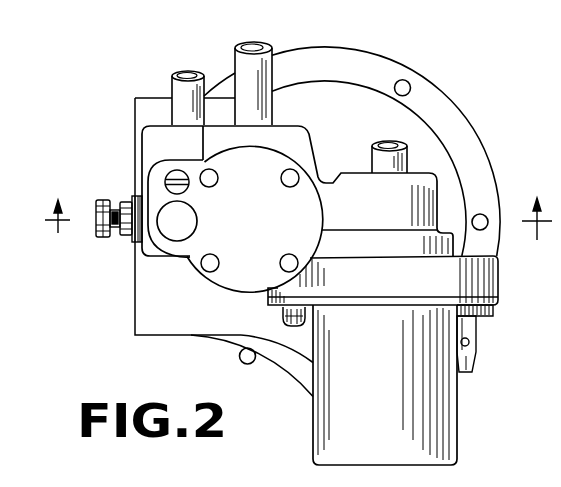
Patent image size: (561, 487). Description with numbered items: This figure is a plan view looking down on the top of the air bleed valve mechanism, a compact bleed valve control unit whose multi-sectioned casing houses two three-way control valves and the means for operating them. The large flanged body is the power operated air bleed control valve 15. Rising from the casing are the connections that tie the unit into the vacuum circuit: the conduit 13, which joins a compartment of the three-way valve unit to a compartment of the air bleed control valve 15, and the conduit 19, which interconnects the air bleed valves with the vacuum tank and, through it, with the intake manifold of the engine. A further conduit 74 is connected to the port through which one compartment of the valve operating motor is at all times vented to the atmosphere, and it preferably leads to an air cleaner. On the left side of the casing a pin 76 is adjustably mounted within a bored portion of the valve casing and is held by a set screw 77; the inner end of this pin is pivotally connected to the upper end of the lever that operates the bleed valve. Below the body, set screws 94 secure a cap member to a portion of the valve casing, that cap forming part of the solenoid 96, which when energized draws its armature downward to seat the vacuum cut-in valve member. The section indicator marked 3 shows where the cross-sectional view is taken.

The section line 3- 3 is at (298, 211).
The conduit 13 is at (258, 70).
The power operated air bleed control valve 15 is at (451, 86).
The conduit 19 is at (373, 156).
The conduit 74 is at (176, 85).
The pin 76 is at (176, 229).
The set screw 77 is at (99, 241).
The set screws 94 is at (283, 318).
The solenoid 96 is at (442, 436).